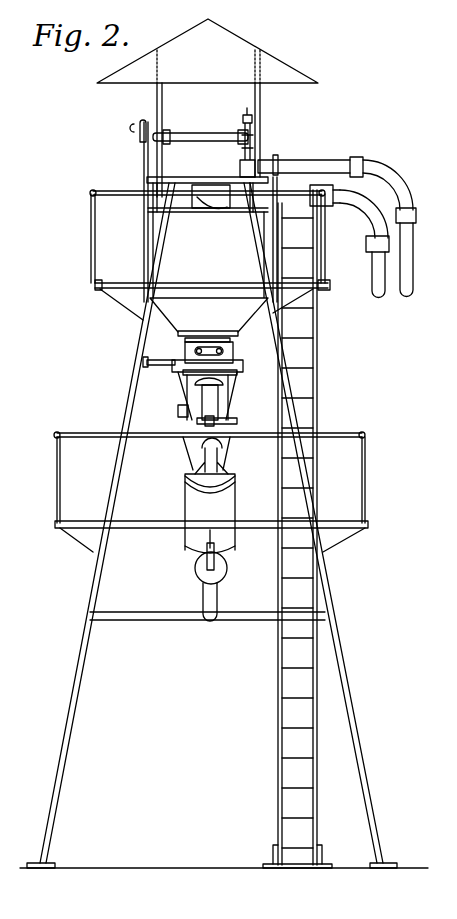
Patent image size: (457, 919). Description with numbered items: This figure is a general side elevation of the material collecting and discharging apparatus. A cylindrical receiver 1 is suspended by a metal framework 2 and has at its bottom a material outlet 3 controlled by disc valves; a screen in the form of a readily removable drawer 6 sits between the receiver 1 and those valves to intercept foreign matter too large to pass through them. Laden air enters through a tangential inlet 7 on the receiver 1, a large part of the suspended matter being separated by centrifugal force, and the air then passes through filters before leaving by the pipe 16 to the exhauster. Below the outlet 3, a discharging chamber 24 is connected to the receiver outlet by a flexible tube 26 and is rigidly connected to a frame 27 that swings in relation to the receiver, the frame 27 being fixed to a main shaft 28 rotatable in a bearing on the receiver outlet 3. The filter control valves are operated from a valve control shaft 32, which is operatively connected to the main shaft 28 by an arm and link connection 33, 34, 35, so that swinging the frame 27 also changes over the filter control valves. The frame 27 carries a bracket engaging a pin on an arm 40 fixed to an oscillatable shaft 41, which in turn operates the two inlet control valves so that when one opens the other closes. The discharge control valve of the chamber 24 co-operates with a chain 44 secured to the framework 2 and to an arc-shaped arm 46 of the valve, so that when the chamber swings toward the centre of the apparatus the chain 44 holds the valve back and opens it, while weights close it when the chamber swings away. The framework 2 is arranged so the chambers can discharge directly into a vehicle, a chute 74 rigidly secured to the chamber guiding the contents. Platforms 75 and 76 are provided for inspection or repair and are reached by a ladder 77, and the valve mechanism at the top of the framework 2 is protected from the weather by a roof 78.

The cylindrical receiver 1 is at (217, 271).
The metal framework 2 is at (72, 673).
The material outlet 3 is at (232, 343).
The readily removable drawer 6 is at (197, 351).
The tangential inlet 7 is at (373, 292).
The pipe 16 is at (265, 161).
The discharging chamber 24 is at (193, 493).
The flexible tube 26 is at (217, 401).
The frame 27 is at (182, 391).
The main shaft 28 is at (165, 366).
The valve control shaft 32 is at (220, 133).
The arm and link connection 33 is at (139, 128).
The arm and link connection 34 is at (143, 241).
The arm and link connection 35 is at (143, 359).
The arm 40 is at (178, 414).
The oscillatable shaft 41 is at (227, 426).
The chain 44 is at (203, 537).
The arc-shaped arm 46 is at (190, 554).
The chute 74 is at (203, 589).
The platform 75 is at (68, 524).
The platform 76 is at (97, 291).
The ladder 77 is at (278, 651).
The roof 78 is at (228, 47).